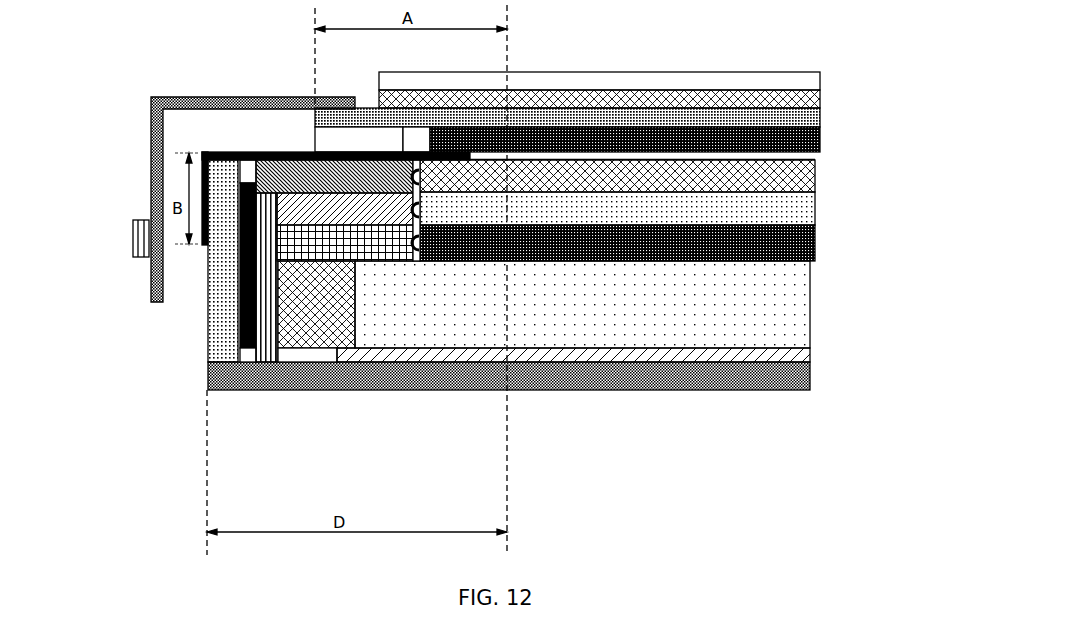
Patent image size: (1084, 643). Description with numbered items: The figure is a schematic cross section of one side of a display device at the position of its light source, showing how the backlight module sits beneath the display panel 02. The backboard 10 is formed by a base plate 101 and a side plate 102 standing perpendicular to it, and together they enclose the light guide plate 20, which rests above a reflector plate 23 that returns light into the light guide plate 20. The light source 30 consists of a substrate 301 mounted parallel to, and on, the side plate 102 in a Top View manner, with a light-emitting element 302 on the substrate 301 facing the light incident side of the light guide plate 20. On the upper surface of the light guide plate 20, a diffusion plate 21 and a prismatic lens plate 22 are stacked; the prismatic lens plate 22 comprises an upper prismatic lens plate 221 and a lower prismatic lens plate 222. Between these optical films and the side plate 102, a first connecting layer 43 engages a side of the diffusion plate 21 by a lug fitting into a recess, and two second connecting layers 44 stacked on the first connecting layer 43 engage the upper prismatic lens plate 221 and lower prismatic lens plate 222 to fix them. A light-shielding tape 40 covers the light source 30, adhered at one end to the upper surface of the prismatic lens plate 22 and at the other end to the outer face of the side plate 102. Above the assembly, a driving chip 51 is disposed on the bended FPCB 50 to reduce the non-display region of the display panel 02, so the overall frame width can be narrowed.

The display panel 02 is at (823, 72).
The backboard 10 is at (448, 276).
The base plate 101 is at (224, 380).
The side plate 102 is at (222, 346).
The light guide plate 20 is at (792, 308).
The diffusion plate 21 is at (793, 243).
The prismatic lens plate 22 is at (677, 192).
The upper prismatic lens plate 221 is at (795, 175).
The lower prismatic lens plate 222 is at (795, 205).
The reflector plate 23 is at (800, 355).
The light source 30 is at (300, 334).
The substrate 301 is at (273, 348).
The light-emitting element 302 is at (332, 338).
The light-shielding tape 40 is at (270, 153).
The first connecting layer 43 is at (345, 243).
The second connecting layer 44 is at (334, 192).
The FPCB 50 is at (157, 131).
The driving chip 51 is at (140, 236).